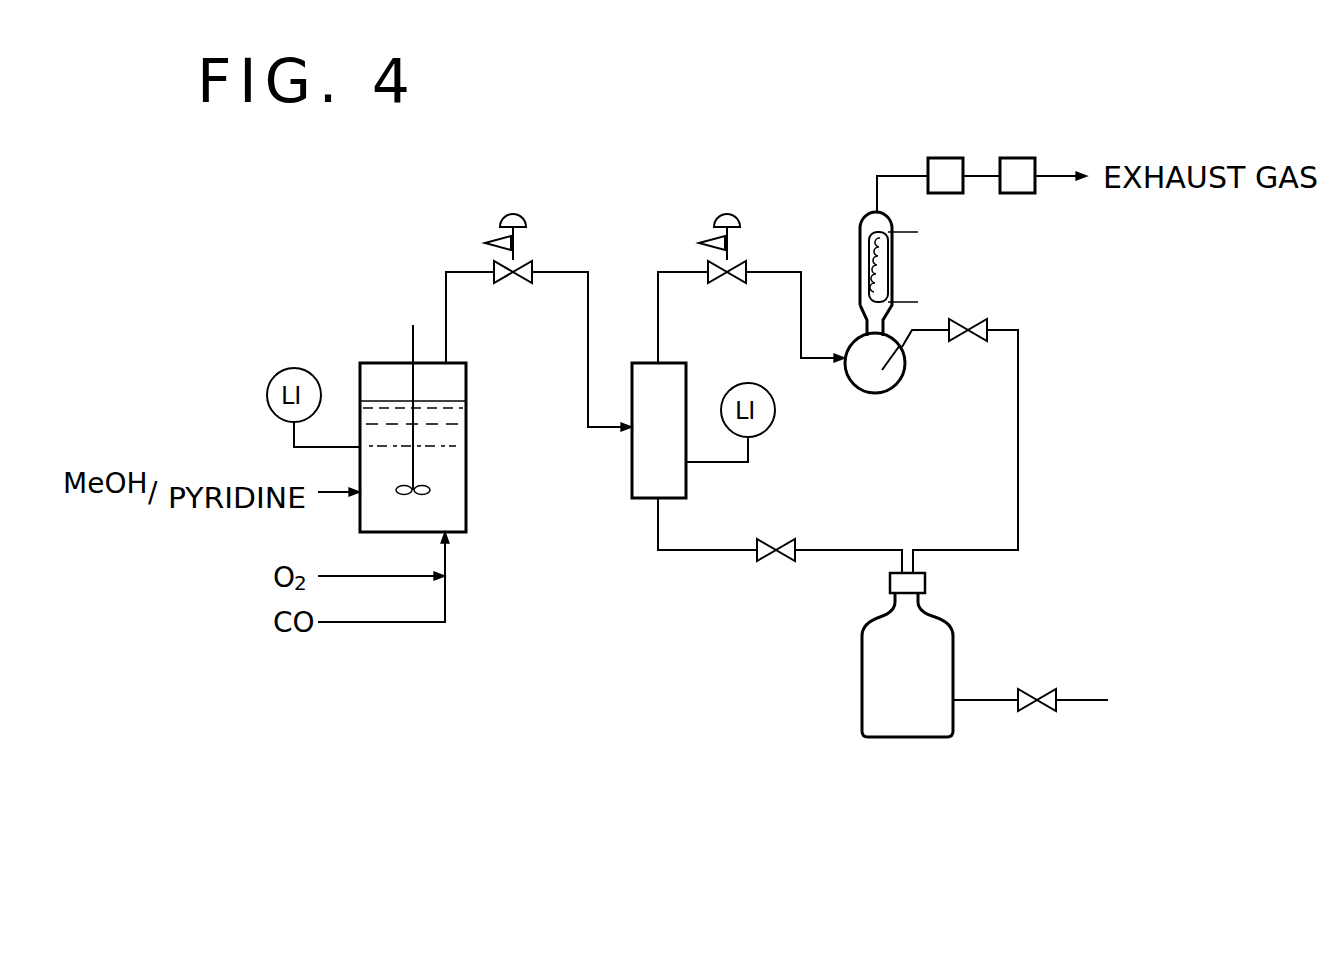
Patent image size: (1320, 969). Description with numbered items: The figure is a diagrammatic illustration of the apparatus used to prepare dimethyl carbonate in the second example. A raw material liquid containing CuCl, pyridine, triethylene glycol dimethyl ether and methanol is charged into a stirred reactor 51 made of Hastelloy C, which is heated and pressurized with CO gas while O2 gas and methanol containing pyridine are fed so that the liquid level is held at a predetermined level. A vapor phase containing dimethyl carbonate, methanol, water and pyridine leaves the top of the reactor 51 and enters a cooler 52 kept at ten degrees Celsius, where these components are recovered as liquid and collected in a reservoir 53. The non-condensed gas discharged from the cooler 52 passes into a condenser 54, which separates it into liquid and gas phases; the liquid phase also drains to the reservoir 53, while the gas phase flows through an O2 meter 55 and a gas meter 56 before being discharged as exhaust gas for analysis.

The reactor 51 is at (466, 410).
The cooler 52 is at (628, 468).
The reservoir 53 is at (862, 707).
The condenser 54 is at (888, 263).
The O2 meter 55 is at (945, 158).
The gas meter 56 is at (1019, 158).